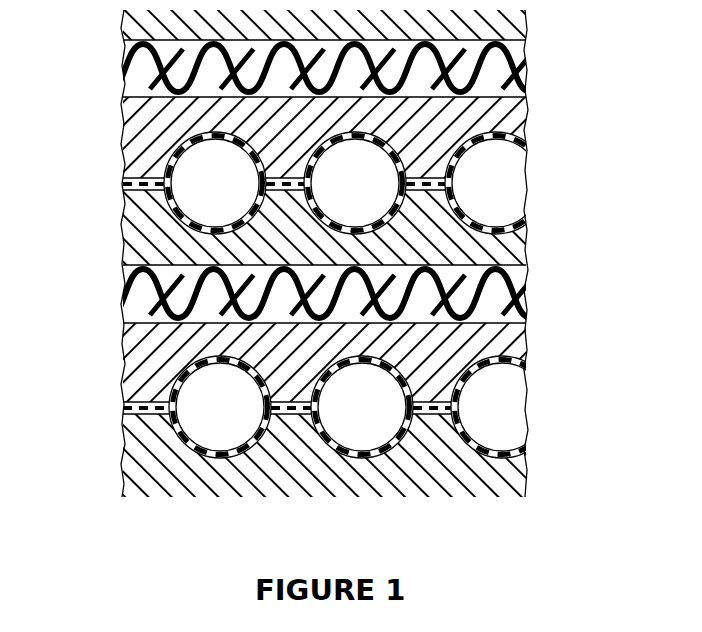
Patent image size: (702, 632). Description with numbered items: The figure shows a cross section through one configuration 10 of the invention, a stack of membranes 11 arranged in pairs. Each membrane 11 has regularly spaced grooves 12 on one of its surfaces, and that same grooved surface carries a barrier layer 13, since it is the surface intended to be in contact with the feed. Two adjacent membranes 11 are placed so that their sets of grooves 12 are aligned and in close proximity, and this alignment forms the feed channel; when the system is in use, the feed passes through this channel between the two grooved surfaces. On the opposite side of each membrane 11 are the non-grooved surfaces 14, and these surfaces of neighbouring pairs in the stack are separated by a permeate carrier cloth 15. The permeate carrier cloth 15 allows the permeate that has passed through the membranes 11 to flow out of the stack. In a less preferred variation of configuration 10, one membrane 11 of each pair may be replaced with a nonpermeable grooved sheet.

The configuration 10 is at (336, 540).
The membranes 11 is at (158, 113).
The grooves 12 is at (226, 198).
The barrier layers 13 is at (392, 136).
The non-grooved surfaces 14 is at (290, 98).
The permeate carrier cloth 15 is at (492, 68).